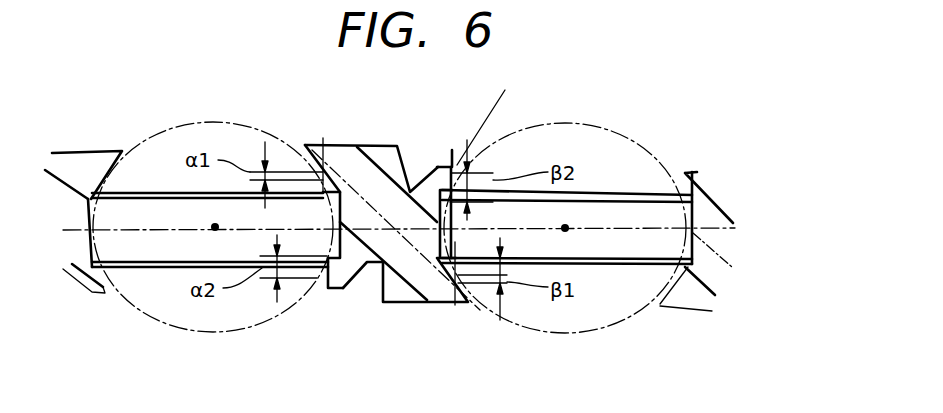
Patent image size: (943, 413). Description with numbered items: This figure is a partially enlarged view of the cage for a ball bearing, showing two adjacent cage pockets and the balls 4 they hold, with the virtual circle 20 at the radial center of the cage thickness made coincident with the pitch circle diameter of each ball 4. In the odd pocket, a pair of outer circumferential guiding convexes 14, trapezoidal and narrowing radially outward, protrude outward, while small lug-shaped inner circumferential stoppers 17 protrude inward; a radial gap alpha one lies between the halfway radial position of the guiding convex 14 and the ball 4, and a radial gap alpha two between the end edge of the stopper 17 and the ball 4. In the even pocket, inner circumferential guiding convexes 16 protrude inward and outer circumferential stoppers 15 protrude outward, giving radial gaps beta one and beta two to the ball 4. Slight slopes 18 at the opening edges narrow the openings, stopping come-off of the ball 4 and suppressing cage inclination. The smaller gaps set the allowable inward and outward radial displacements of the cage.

The ball 4 is at (175, 124).
The outer circumferential guiding convex 14 is at (345, 153).
The outer circumferential stopper 15 is at (437, 165).
The inner circumferential guiding convex 16 is at (408, 302).
The inner circumferential stopper 17 is at (337, 293).
The slight slope 18 is at (157, 193).
The virtual circle 20 is at (708, 230).